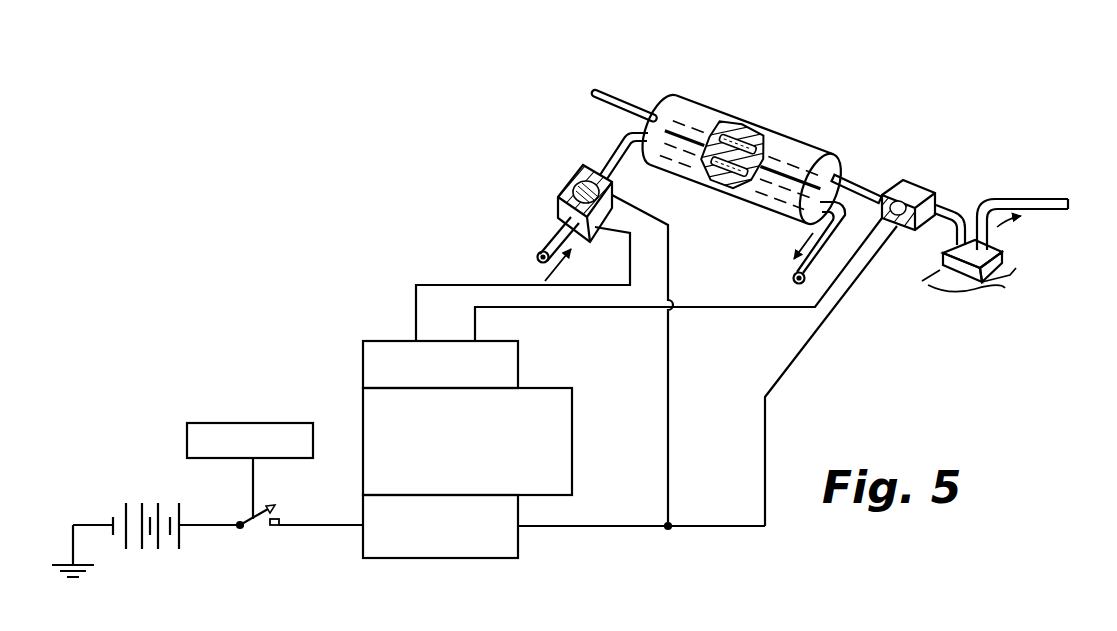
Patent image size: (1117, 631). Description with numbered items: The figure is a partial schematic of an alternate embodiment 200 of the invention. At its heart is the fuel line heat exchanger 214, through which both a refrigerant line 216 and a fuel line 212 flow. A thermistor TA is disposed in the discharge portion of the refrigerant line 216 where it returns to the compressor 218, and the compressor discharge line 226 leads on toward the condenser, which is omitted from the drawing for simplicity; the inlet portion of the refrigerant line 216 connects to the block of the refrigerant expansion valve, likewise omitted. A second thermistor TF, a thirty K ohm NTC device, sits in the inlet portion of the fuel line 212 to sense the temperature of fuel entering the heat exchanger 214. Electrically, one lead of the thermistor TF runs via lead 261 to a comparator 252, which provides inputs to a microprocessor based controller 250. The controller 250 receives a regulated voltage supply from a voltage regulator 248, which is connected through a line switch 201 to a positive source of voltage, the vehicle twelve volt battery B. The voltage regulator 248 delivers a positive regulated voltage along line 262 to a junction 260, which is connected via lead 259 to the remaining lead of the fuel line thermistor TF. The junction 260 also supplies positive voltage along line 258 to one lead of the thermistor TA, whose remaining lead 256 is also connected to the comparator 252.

The alternate embodiment 200 is at (572, 84).
The fuel line 212 is at (609, 142).
The fuel line heat exchanger 214 is at (788, 136).
The refrigerant line 216 is at (623, 92).
The compressor 218 is at (1010, 250).
The compressor discharge line 226 is at (1034, 197).
The voltage regulator 248 is at (418, 558).
The microprocessor based controller 250 is at (566, 388).
The comparator 252 is at (355, 340).
The remaining lead of thermistor TA 256 is at (533, 310).
The line 258 is at (740, 527).
The lead 259 is at (668, 456).
The junction 260 is at (665, 527).
The sensor lead 261 is at (437, 282).
The line 262 is at (560, 528).
The line switch 201 is at (253, 528).
The battery B is at (131, 498).
The fuel line thermistor TF is at (573, 185).
The thermistor TA is at (909, 182).